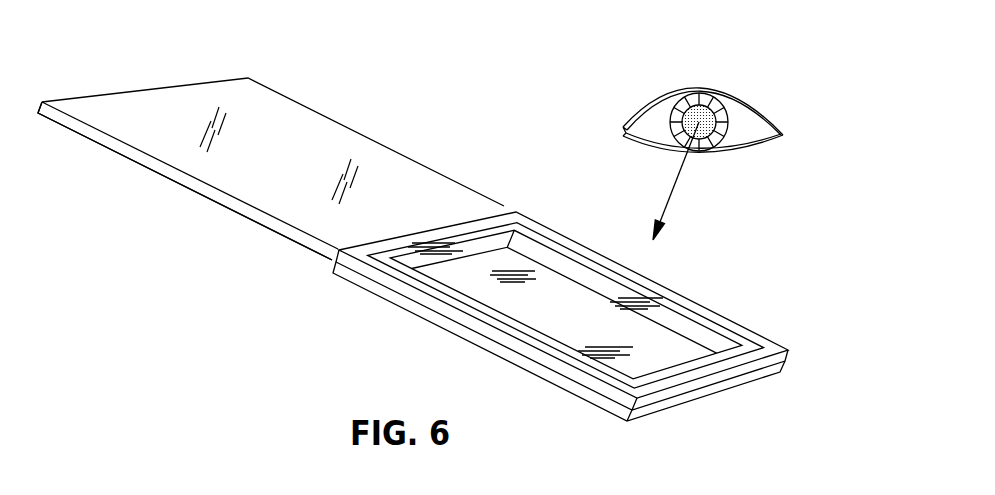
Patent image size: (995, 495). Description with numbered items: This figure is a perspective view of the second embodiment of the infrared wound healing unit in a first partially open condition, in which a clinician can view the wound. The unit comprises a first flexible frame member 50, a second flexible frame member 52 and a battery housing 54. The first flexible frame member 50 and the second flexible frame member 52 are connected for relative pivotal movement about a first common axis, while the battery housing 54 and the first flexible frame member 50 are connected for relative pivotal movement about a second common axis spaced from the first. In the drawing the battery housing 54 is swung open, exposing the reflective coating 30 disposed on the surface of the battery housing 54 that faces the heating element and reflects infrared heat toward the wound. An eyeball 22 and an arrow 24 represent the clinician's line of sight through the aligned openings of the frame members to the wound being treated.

The eyeball 22 is at (720, 90).
The arrow 24 is at (676, 183).
The reflective coating 30 is at (305, 137).
The first flexible frame member 50 is at (790, 352).
The second flexible frame member 52 is at (655, 411).
The battery housing 54 is at (186, 184).